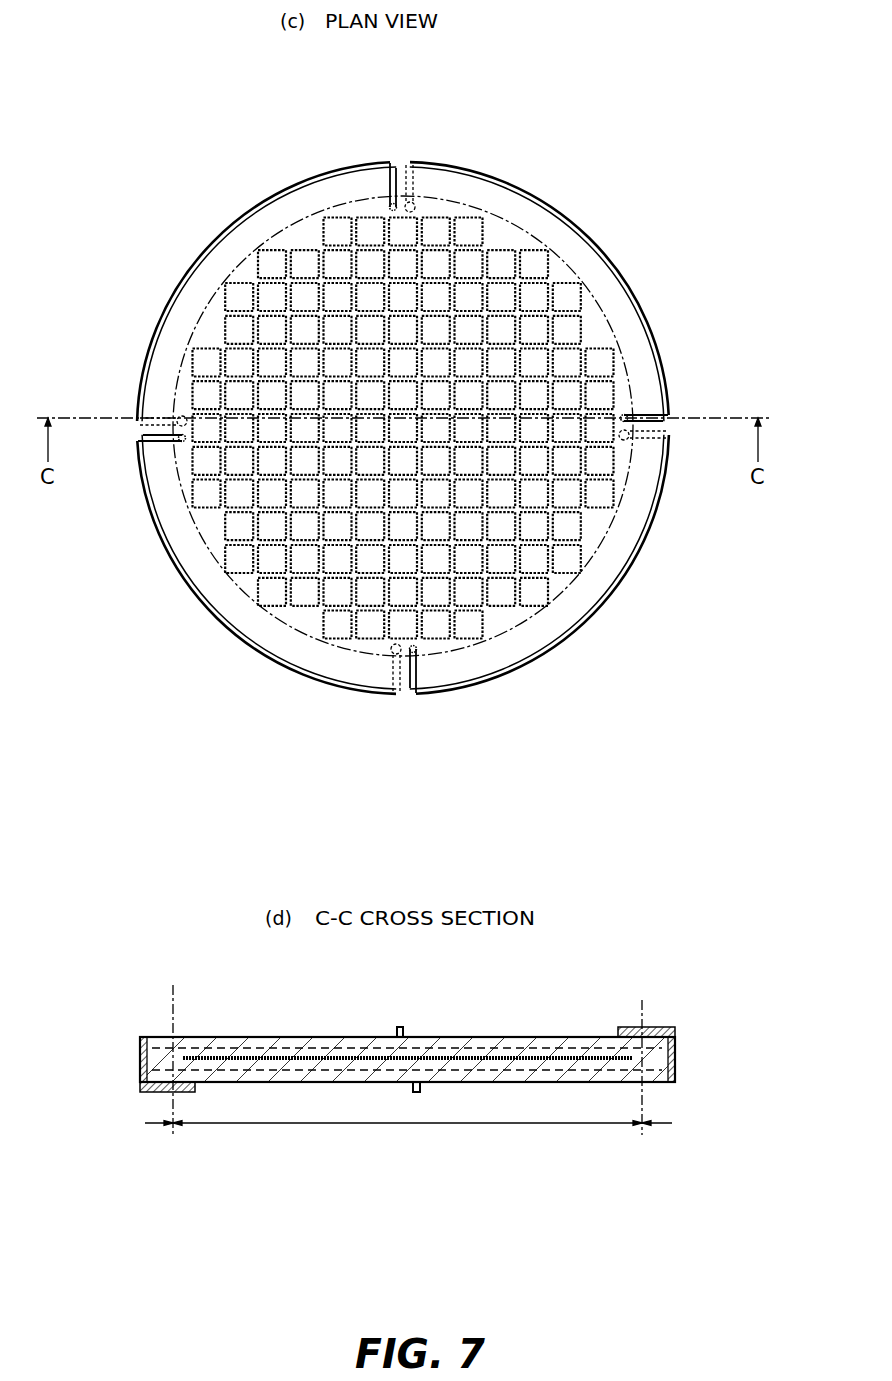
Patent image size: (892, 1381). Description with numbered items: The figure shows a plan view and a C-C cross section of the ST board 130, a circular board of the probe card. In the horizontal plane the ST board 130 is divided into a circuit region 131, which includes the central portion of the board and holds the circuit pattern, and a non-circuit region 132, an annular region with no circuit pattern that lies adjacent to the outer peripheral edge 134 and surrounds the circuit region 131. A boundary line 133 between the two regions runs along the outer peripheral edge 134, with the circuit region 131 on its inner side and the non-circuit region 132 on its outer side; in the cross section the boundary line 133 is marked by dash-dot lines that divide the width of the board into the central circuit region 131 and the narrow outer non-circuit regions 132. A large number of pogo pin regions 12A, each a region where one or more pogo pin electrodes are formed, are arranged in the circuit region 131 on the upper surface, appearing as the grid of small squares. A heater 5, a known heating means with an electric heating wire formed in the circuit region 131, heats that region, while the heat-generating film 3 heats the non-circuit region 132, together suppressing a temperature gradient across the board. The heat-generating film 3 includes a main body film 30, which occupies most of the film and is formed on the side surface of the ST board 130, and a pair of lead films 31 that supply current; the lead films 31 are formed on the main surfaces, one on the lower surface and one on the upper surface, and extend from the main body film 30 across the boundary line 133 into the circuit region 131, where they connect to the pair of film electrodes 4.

The ST board 130 is at (521, 108).
The heat-generating film 3 is at (378, 650).
The main body film 30 is at (242, 212).
The lead film 31 is at (393, 205).
The film electrode 4 is at (397, 207).
The heater 5 is at (480, 1058).
The pogo pin region 12A is at (233, 330).
The circuit region 131 is at (553, 264).
The non-circuit region 132 is at (625, 320).
The boundary line 133 is at (597, 288).
The outer peripheral edge 134 is at (648, 522).